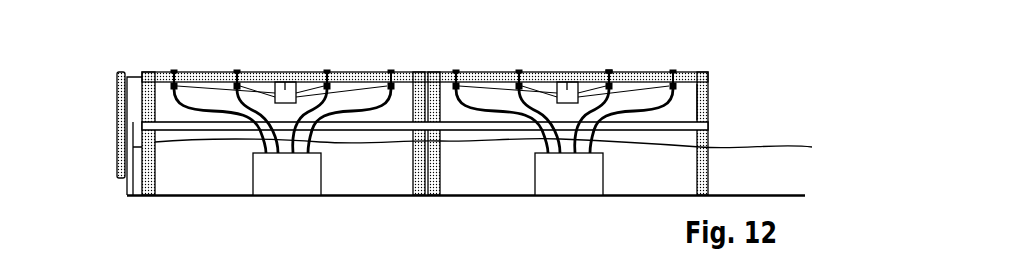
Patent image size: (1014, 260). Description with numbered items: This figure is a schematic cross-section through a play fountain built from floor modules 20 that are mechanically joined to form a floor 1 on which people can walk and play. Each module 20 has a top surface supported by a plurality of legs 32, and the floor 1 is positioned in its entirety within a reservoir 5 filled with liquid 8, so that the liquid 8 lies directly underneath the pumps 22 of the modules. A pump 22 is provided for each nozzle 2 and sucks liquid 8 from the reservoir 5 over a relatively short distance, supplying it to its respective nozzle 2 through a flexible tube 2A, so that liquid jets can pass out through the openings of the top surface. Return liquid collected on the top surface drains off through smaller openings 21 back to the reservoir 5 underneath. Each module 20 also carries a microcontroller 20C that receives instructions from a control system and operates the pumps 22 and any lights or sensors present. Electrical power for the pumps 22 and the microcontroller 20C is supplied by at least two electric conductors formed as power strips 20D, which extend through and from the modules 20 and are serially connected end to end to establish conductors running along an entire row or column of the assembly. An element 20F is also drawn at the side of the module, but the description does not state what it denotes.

The floor 1 is at (721, 30).
The nozzle 2 is at (614, 79).
The flexible tube 2A is at (480, 103).
The reservoir 5 is at (131, 177).
The liquid 8 is at (213, 188).
The floor module 20 is at (709, 70).
The microcontroller 20C is at (566, 82).
The power strip 20D is at (678, 122).
The side plate 20F is at (120, 126).
The opening 21 is at (609, 82).
The pump 22 is at (583, 187).
The leg 32 is at (701, 90).